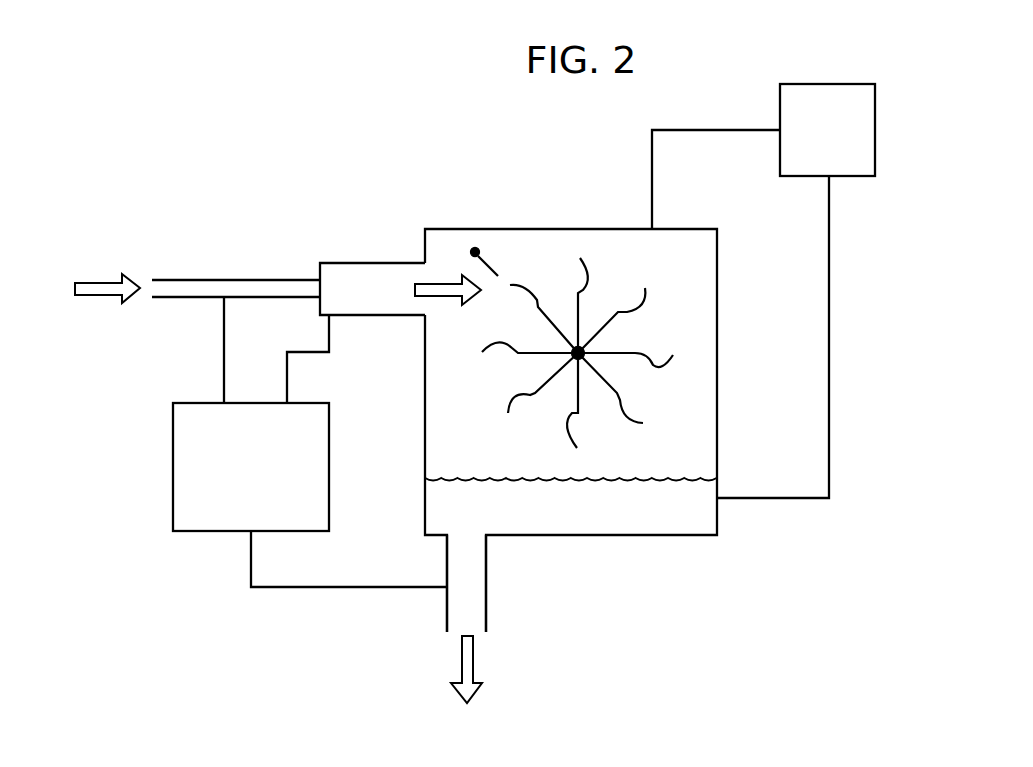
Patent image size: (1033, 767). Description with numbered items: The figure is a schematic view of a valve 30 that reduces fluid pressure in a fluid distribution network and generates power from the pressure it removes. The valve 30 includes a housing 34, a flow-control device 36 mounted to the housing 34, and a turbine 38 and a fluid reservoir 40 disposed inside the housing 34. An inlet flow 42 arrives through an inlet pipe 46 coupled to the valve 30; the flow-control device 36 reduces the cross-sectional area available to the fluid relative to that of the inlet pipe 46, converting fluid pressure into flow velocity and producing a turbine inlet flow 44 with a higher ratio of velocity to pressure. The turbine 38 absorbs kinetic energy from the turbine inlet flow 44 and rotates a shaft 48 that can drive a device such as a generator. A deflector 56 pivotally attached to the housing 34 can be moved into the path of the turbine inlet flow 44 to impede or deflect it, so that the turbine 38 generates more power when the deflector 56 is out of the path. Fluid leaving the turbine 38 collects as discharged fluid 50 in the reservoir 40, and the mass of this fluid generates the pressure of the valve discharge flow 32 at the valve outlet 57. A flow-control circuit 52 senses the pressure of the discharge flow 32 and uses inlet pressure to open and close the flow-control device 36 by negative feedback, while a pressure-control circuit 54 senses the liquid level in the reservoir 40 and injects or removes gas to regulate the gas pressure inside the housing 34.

The valve 30 is at (400, 168).
The valve discharge flow 32 is at (476, 658).
The housing 34 is at (558, 229).
The flow-control device 36 is at (360, 261).
The turbine 38 is at (605, 297).
The fluid reservoir 40 is at (685, 468).
The inlet flow 42 is at (102, 282).
The turbine inlet flow 44 is at (448, 297).
The inlet pipe 46 is at (213, 279).
The shaft 48 is at (598, 349).
The discharged fluid 50 is at (608, 520).
The flow-control circuit 52 is at (160, 502).
The pressure-control circuit 54 is at (822, 82).
The deflector 56 is at (487, 261).
The valve outlet 57 is at (470, 545).